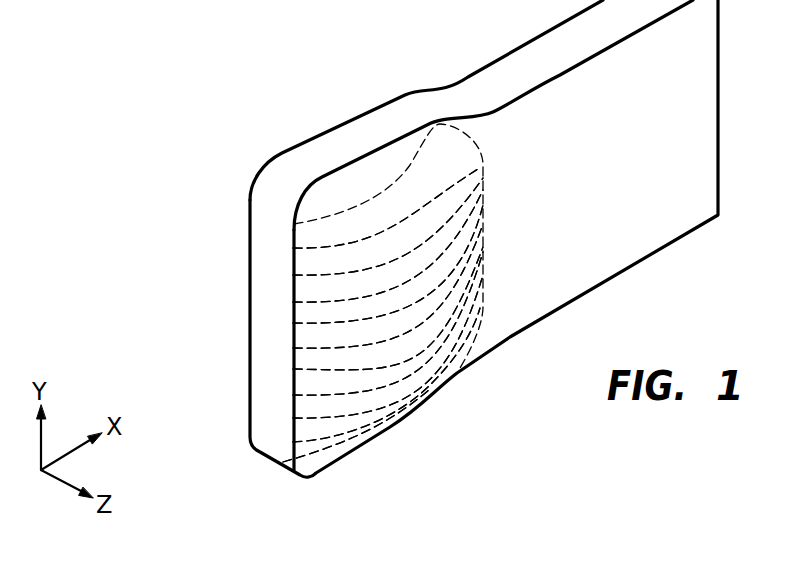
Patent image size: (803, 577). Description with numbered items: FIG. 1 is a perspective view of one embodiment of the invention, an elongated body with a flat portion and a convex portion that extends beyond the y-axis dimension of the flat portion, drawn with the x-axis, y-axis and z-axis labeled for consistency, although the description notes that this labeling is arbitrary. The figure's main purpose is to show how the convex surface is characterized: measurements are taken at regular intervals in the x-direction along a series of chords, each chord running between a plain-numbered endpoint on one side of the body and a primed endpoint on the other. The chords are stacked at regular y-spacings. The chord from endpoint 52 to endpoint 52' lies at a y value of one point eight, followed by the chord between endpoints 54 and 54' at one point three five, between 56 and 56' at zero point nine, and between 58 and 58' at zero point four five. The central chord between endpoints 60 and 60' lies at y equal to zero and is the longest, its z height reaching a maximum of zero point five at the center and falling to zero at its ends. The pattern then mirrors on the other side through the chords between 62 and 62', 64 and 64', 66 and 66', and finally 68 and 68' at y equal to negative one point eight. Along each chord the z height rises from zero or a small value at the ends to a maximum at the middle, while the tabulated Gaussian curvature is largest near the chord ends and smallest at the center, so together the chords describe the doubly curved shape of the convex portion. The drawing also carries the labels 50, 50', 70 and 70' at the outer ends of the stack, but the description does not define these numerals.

The composite bar / bend body 50 is at (449, 238).
The chord endpoint 52 is at (330, 207).
The chord endpoint 54 is at (331, 226).
The chord endpoint 56 is at (331, 246).
The chord endpoint 58 is at (331, 264).
The chord endpoint 60 is at (331, 287).
The chord endpoint 62 is at (331, 316).
The chord endpoint 64 is at (331, 336).
The chord endpoint 66 is at (331, 365).
The chord endpoint 68 is at (330, 399).
The ply layer 70 is at (305, 457).
The curved portion of bar 50' is at (428, 186).
The chord endpoint 52' is at (428, 151).
The chord endpoint 54' is at (428, 182).
The chord endpoint 56' is at (428, 213).
The chord endpoint 58' is at (428, 242).
The chord endpoint 60' is at (428, 273).
The chord endpoint 62' is at (428, 301).
The chord endpoint 64' is at (428, 323).
The chord endpoint 66' is at (428, 346).
The chord endpoint 68' is at (428, 375).
The curved portion of ply layer 70' is at (423, 415).